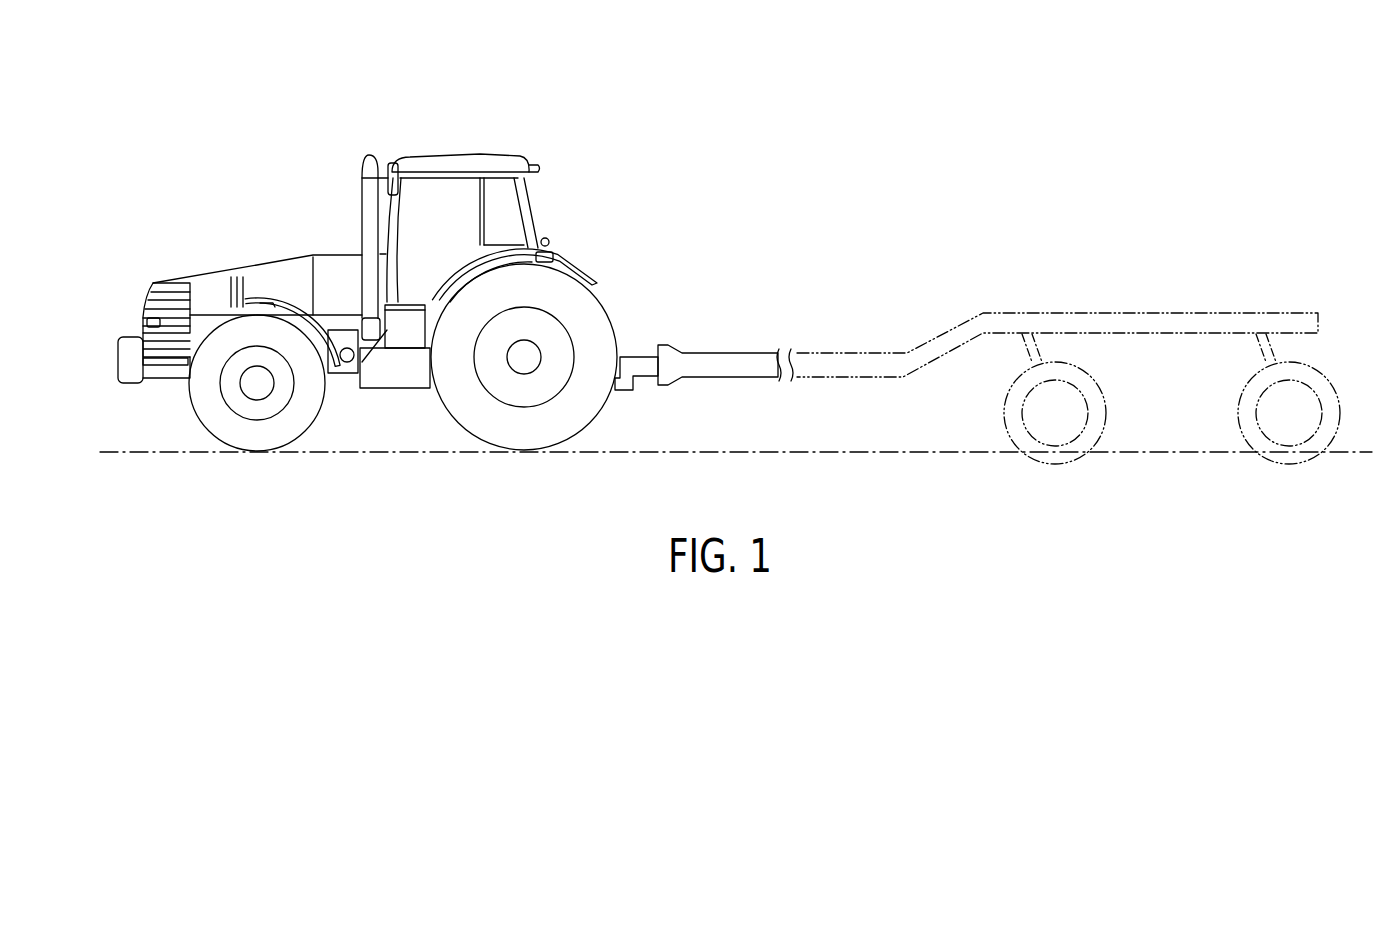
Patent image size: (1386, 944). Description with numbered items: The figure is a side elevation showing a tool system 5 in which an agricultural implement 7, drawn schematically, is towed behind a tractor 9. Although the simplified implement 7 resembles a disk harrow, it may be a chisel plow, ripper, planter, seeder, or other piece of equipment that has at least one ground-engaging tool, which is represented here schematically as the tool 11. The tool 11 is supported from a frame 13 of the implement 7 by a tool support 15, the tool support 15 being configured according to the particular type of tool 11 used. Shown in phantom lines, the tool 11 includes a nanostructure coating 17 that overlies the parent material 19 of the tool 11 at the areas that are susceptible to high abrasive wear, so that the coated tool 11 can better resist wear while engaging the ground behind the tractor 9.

The tool system 5 is at (1018, 545).
The agricultural implement 7 is at (1188, 243).
The tractor 9 is at (488, 90).
The tool 11 is at (1104, 457).
The frame 13 is at (1115, 323).
The tool support 15 is at (1017, 338).
The nanostructure coating 17 is at (1055, 455).
The parent material 19 is at (1035, 413).